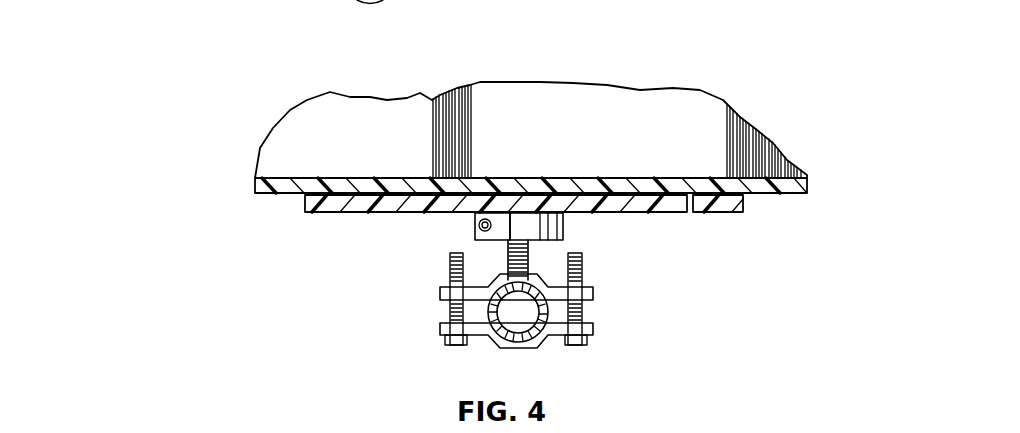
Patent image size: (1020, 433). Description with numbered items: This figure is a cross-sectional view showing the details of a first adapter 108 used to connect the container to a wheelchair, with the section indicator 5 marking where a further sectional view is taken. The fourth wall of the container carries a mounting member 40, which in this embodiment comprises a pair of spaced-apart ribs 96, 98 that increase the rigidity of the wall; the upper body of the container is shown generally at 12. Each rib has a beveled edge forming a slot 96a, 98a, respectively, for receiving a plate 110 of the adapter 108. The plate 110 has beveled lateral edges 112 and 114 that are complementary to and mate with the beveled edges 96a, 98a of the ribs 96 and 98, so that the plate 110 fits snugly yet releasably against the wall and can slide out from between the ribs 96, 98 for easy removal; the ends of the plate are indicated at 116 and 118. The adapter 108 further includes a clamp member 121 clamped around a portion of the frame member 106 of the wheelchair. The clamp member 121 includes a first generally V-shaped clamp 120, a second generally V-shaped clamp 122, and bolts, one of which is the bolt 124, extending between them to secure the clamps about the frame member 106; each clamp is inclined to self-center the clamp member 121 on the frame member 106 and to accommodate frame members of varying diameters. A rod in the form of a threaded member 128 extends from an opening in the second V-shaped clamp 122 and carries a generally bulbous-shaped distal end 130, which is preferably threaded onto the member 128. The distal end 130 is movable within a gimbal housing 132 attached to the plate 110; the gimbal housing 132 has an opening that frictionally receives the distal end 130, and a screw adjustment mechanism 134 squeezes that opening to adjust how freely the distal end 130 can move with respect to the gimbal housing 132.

The shoe upper body 12 is at (548, 129).
The mounting member 40 is at (606, 178).
The rib 96 is at (333, 214).
The beveled edge (slot) 96a is at (340, 190).
The rib 98 is at (720, 213).
The beveled edge (slot) 98a is at (693, 180).
The plate 110 is at (655, 213).
The beveled lateral edge 112 is at (365, 177).
The beveled lateral edge 114 is at (683, 178).
The flange end 116 is at (345, 200).
The flange edge 118 is at (698, 213).
The threaded member 128 is at (508, 262).
The bulbous-shaped distal end 130 is at (563, 227).
The gimbal housing 132 is at (576, 129).
The screw adjustment mechanism 134 is at (486, 219).
The adapter 108 is at (531, 325).
The bolt 124 is at (447, 310).
The clamp member 121 is at (620, 337).
The second generally V-shaped clamp 122 is at (593, 290).
The frame member 106 is at (463, 343).
The first generally V-shaped clamp 120 is at (595, 333).
The section line 5- 5 is at (273, 200).